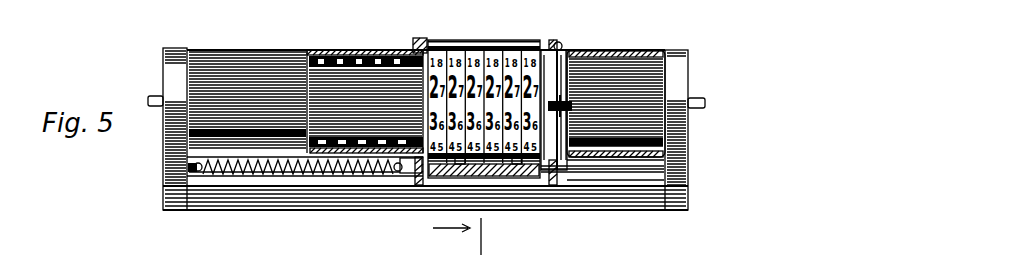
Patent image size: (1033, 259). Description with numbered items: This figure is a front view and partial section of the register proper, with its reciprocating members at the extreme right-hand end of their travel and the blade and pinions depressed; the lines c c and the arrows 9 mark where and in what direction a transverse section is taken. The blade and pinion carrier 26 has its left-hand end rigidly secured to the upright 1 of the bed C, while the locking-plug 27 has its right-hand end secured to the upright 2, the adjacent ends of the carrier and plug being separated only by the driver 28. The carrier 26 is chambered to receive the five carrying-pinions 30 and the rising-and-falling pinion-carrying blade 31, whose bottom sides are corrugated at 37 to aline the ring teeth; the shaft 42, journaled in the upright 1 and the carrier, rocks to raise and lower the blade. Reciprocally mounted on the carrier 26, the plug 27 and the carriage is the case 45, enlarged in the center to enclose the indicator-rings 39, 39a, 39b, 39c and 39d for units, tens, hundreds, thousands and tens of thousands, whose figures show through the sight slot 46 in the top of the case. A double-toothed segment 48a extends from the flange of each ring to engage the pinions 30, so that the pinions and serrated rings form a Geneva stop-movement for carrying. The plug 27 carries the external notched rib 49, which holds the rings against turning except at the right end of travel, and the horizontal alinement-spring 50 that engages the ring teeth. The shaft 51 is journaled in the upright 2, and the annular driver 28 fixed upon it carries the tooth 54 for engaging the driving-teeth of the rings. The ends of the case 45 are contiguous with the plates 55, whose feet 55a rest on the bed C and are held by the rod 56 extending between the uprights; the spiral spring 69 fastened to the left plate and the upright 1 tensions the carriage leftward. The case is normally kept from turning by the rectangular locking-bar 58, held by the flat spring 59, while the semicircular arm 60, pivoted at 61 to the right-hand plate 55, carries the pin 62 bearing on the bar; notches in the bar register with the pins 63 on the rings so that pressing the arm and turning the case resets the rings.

The upright 1 is at (179, 51).
The upright 2 is at (668, 138).
The arrows 9 is at (451, 237).
The blade and pinion carrier 26 is at (325, 107).
The locking-plug 27 is at (670, 146).
The driver 28 is at (372, 56).
The carrying-pinions 30 is at (327, 50).
The pinion-carrying blade 31 is at (313, 177).
The indented or corrugated sides 37 is at (330, 215).
The indicator-ring 39 is at (548, 40).
The indicator-ring 39a is at (557, 176).
The indicator-ring 39b is at (505, 34).
The indicator-ring 39c is at (478, 40).
The indicator-ring 39d is at (403, 163).
The shaft 42 is at (158, 96).
The case 45 is at (657, 52).
The sight slot or opening 46 is at (556, 42).
The double-toothed segment 48a is at (540, 177).
The notched rib 49 is at (410, 56).
The alinement-spring 50 is at (380, 160).
The shaft 51 is at (698, 97).
The tooth 54 is at (385, 62).
The plates 55 is at (413, 38).
The feet 55a is at (412, 178).
The rod 56 is at (653, 188).
The locking-bar 58 is at (518, 176).
The flat spring 59 is at (372, 220).
The semicircular arm 60 is at (588, 150).
The pivot 61 is at (562, 44).
The pin 62 is at (592, 176).
The pins 63 is at (460, 164).
The spiral spring 69 is at (262, 194).
The section lines c is at (489, 236).
The bed C is at (567, 145).